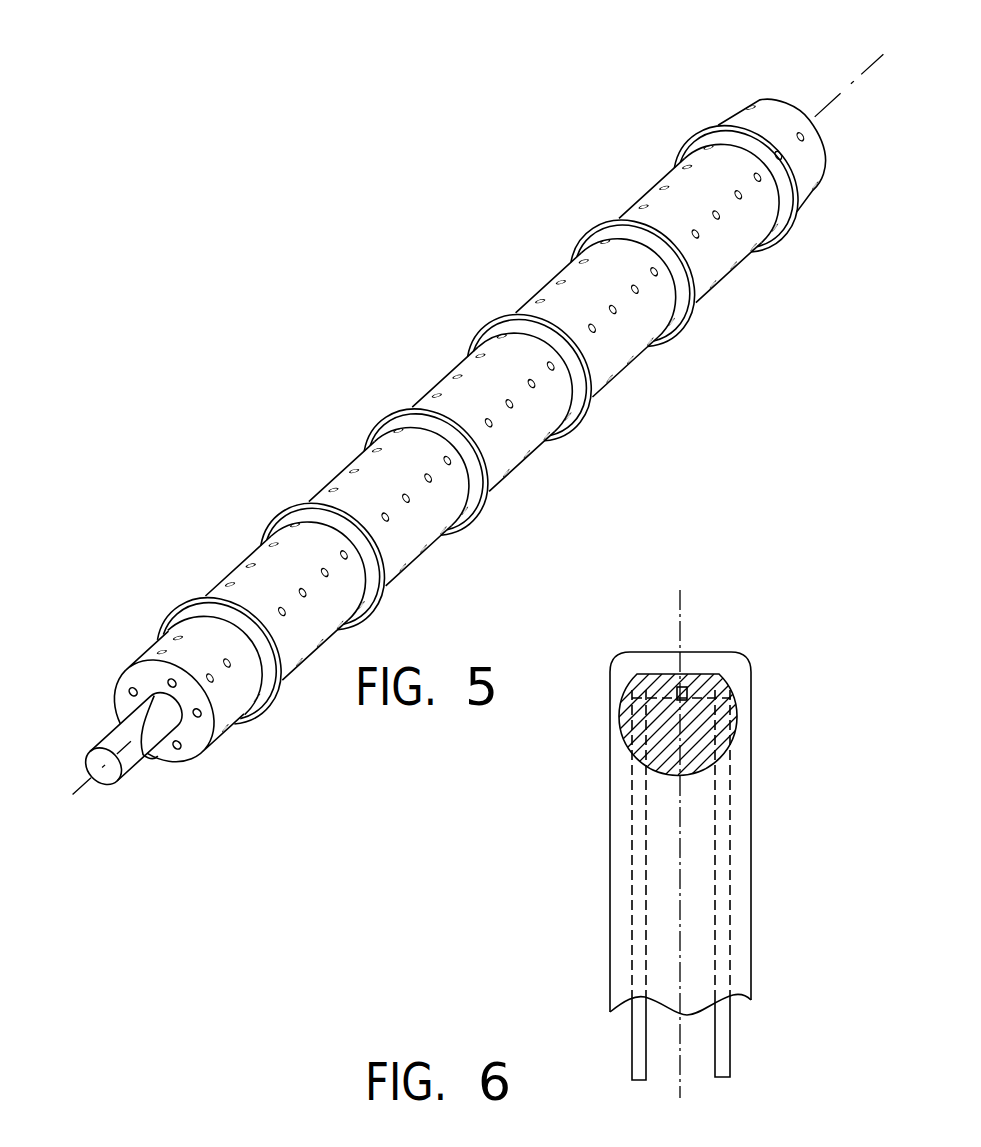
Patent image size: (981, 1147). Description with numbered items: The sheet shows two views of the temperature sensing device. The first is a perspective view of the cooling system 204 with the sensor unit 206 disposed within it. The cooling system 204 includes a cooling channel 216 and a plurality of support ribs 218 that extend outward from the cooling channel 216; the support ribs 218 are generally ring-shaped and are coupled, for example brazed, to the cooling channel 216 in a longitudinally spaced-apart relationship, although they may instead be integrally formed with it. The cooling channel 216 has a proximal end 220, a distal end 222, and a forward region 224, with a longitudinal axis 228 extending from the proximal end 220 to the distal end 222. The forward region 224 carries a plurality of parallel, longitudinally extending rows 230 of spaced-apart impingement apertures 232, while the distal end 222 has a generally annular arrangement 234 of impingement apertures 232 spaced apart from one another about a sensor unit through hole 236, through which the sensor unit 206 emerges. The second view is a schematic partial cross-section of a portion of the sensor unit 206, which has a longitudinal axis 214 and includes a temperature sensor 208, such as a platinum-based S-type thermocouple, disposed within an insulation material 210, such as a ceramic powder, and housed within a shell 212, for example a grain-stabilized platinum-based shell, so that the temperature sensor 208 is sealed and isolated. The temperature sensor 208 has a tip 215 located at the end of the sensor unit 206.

In FIG. 5, the cooling system 204 is at (397, 187).
In FIG. 5, the sensor unit 206 is at (113, 778).
In FIG. 6, the sensor unit 206 is at (777, 645).
In FIG. 6, the temperature sensor 208 is at (650, 692).
In FIG. 6, the insulation material 210 is at (642, 742).
In FIG. 6, the shell 212 is at (752, 878).
In FIG. 6, the longitudinal axis 214 is at (682, 607).
In FIG. 6, the tip 215 is at (733, 691).
In FIG. 5, the cooling channel 216 is at (733, 273).
In FIG. 5, the support ribs 218 is at (607, 232).
In FIG. 5, the proximal end 220 is at (775, 98).
In FIG. 5, the distal end 222 is at (208, 732).
In FIG. 5, the forward region 224 is at (490, 443).
In FIG. 5, the longitudinal axis 228 is at (848, 82).
In FIG. 5, the rows 230 is at (355, 477).
In FIG. 5, the impingement apertures 232 is at (613, 307).
In FIG. 5, the annular arrangement 234 is at (140, 668).
In FIG. 5, the sensor unit through hole 236 is at (145, 757).